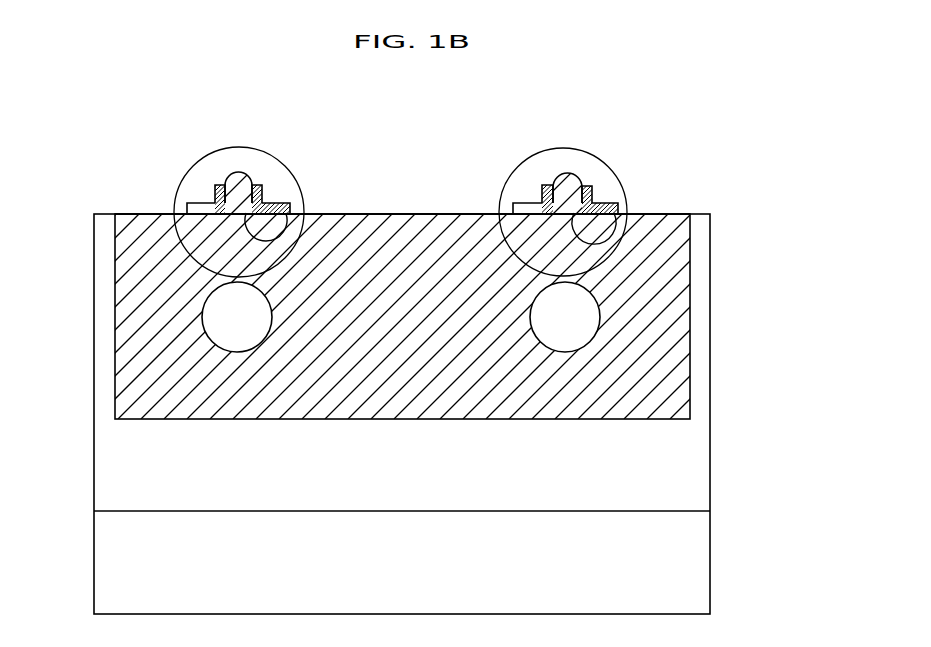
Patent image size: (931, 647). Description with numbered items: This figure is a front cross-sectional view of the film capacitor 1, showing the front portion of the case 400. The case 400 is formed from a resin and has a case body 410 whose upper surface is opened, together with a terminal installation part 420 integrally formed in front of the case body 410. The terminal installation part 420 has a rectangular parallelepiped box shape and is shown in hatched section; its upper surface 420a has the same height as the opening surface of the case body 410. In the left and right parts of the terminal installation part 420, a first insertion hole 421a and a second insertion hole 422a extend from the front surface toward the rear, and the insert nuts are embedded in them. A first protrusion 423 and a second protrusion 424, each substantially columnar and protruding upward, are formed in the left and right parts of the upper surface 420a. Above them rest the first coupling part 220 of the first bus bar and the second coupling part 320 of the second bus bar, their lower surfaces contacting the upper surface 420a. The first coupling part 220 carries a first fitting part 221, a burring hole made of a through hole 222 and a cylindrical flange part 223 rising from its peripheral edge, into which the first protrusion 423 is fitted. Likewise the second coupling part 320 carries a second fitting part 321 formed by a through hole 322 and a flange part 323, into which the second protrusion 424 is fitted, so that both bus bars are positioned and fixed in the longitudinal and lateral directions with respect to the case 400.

The film capacitor 1 is at (70, 237).
The case 400 is at (712, 278).
The case body 410 is at (93, 456).
The terminal installation part 420 is at (458, 292).
The upper surface 420a is at (146, 214).
The first insertion hole 421a is at (237, 352).
The second insertion hole 422a is at (565, 352).
The first protrusion 423 is at (227, 173).
The second protrusion 424 is at (557, 174).
The first coupling part 220 is at (288, 171).
The first fitting part 221 is at (306, 176).
The through hole 222 is at (292, 202).
The flange part 223 is at (262, 190).
The second coupling part 320 is at (616, 172).
The second fitting part 321 is at (633, 175).
The through hole 322 is at (619, 203).
The flange part 323 is at (591, 190).